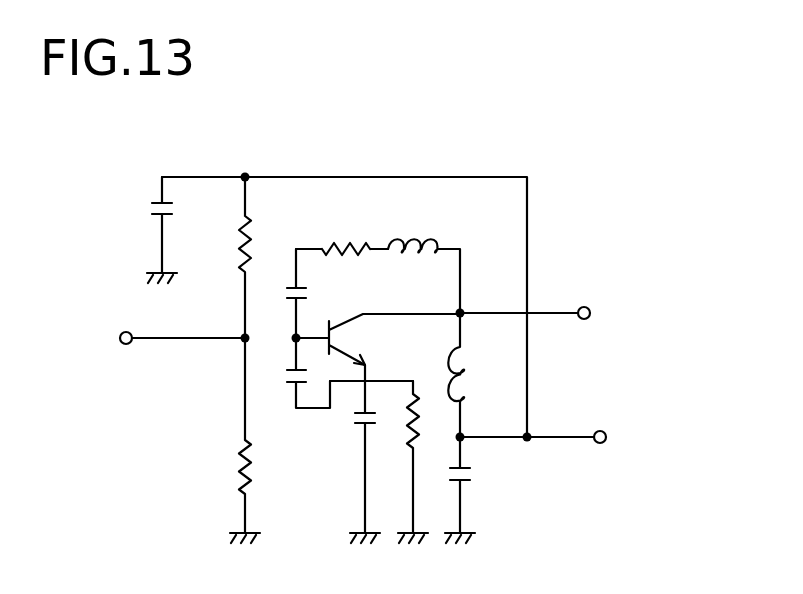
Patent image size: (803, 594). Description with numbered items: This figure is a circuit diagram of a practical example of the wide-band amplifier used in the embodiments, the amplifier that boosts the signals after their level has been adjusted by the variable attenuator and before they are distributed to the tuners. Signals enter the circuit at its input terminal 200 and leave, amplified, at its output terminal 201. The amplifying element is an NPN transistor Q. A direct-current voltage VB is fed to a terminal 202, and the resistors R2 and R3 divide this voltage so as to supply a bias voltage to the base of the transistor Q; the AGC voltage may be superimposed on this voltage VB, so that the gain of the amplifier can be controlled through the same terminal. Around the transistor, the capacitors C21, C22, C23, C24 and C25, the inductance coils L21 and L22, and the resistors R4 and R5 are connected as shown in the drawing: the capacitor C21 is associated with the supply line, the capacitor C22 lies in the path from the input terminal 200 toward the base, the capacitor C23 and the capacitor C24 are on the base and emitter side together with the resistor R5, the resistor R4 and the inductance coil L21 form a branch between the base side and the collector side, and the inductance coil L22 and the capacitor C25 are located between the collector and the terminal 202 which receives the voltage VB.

The capacitor C21 is at (142, 230).
The resistor R2 is at (228, 257).
The resistor R3 is at (230, 440).
The resistor R4 is at (342, 235).
The resistor R5 is at (424, 462).
The inductance coil L21 is at (424, 259).
The inductance coil L22 is at (486, 375).
The capacitor C22 is at (324, 293).
The capacitor C23 is at (290, 377).
The capacitor C24 is at (349, 462).
The capacitor C25 is at (482, 490).
The input terminal 200 is at (121, 333).
The output terminal 201 is at (588, 307).
The terminal 202 is at (600, 443).